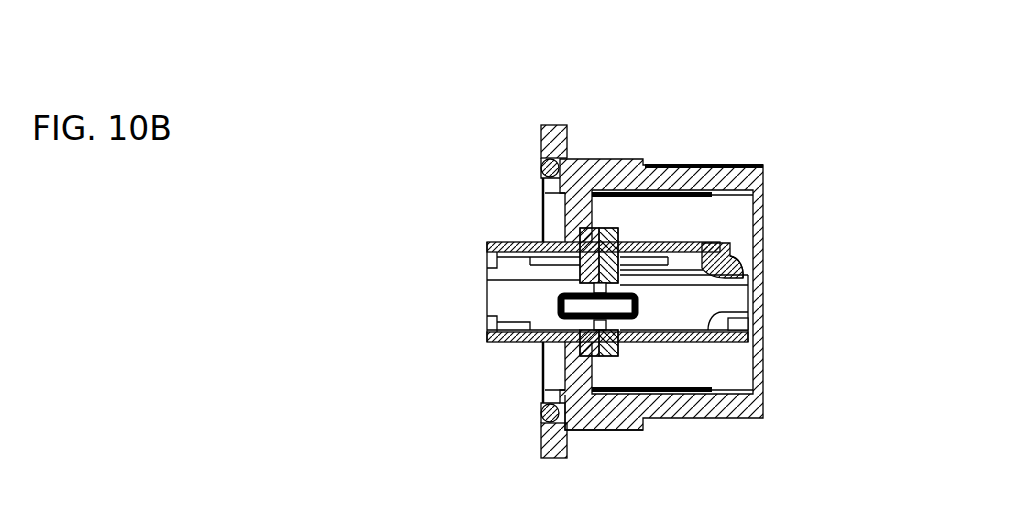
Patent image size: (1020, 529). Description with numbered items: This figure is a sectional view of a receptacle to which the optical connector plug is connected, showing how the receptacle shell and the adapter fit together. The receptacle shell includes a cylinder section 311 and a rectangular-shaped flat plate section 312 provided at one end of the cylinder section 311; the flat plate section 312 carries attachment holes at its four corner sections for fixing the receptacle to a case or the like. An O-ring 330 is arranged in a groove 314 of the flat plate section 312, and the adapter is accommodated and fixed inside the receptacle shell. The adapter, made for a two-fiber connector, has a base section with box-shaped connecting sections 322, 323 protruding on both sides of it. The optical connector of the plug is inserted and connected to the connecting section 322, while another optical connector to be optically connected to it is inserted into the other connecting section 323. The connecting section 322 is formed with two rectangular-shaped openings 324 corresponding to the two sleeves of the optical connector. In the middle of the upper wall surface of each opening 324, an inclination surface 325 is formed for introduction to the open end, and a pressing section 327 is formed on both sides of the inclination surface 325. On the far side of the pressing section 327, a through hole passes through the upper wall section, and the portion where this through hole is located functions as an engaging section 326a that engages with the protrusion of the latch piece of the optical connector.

The cylinder section 311 is at (722, 163).
The flat plate section 312 is at (552, 124).
The groove 314 is at (569, 424).
The connecting section 322 is at (688, 244).
The connecting section 323 is at (507, 243).
The opening 324 is at (700, 325).
The inclination surface 325 is at (722, 250).
The engaging section 326a is at (690, 278).
The pressing section 327 is at (722, 262).
The O-ring 330 is at (545, 414).